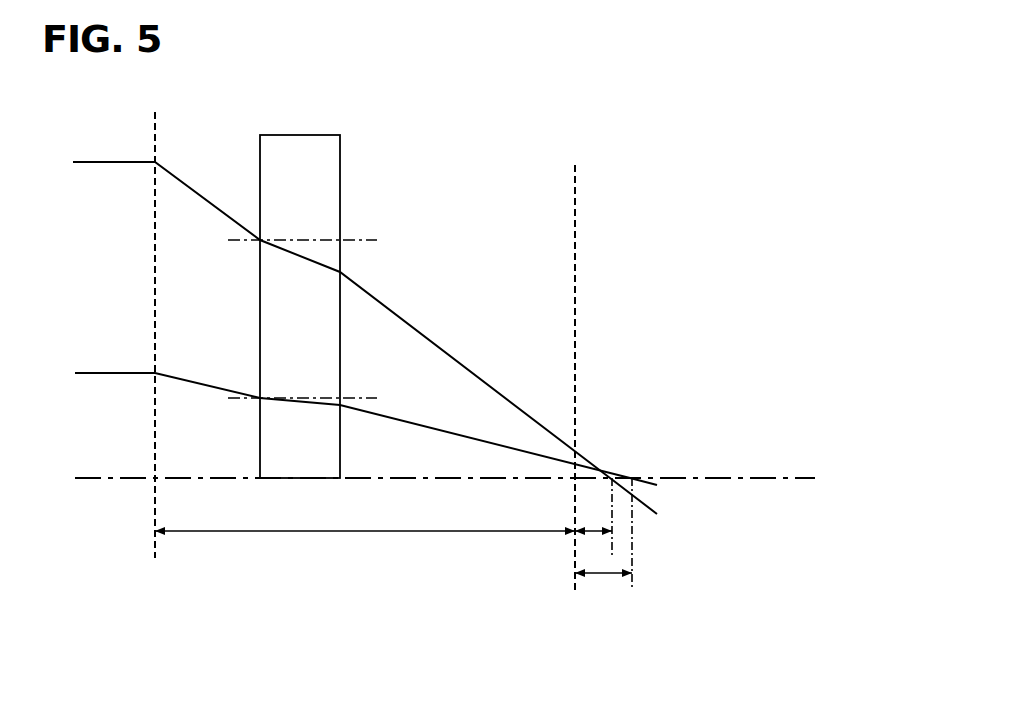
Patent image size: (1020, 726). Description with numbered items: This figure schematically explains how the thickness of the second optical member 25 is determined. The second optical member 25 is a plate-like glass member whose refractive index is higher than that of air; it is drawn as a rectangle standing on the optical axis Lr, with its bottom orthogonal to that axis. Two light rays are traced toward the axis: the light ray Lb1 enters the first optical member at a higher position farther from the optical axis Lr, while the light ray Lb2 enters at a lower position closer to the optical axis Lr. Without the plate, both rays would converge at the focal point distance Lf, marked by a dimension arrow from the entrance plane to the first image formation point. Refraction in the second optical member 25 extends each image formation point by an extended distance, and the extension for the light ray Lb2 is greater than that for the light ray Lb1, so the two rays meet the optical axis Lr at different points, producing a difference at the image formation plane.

The second optical member 25 is at (323, 135).
The optical axis Lr is at (445, 461).
The light ray Lb1 is at (112, 147).
The light ray Lb2 is at (107, 353).
The focal point distance Lf is at (365, 555).